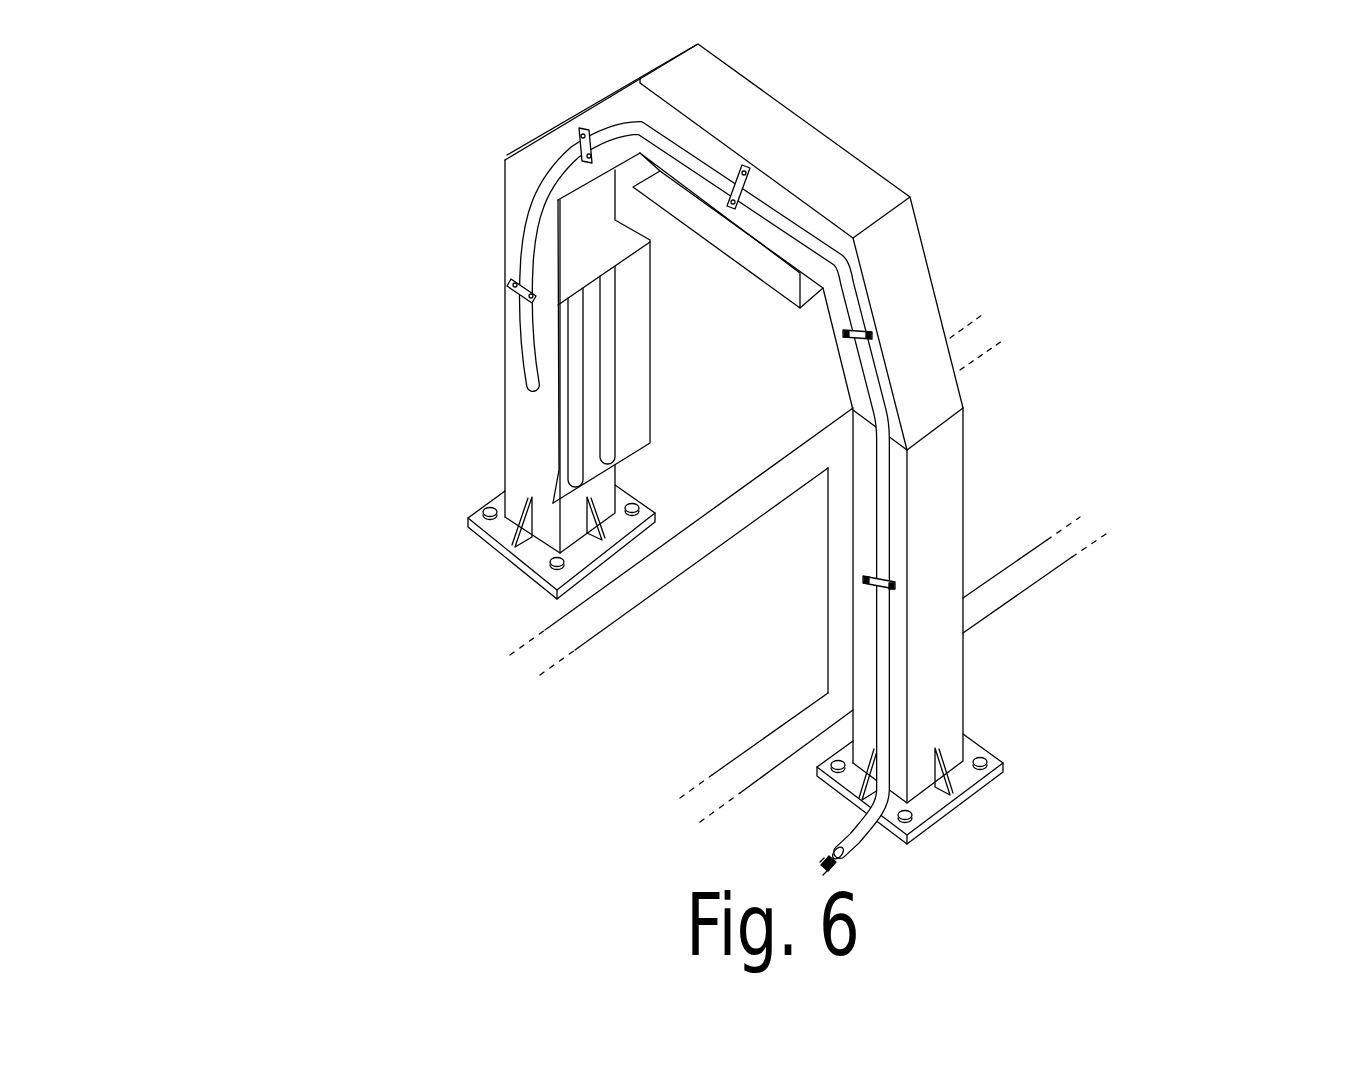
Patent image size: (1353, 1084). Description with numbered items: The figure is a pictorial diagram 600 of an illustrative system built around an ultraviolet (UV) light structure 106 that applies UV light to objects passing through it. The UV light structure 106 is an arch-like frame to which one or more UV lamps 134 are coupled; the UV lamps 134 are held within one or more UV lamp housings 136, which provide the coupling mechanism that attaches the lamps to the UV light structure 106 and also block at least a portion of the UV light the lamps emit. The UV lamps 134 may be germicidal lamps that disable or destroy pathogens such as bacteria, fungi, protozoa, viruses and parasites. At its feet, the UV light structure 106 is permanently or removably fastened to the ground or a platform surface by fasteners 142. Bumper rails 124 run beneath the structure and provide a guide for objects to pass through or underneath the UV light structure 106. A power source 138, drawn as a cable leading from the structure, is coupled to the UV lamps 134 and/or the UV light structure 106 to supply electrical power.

The pictorial diagram 600 is at (210, 95).
The ultraviolet (UV) light structure 106 is at (588, 444).
The UV lamp housing 136 is at (502, 328).
The UV lamp 134 is at (465, 376).
The fastener 142 is at (606, 640).
The bumper rail 124 is at (1042, 582).
The power source 138 is at (846, 510).